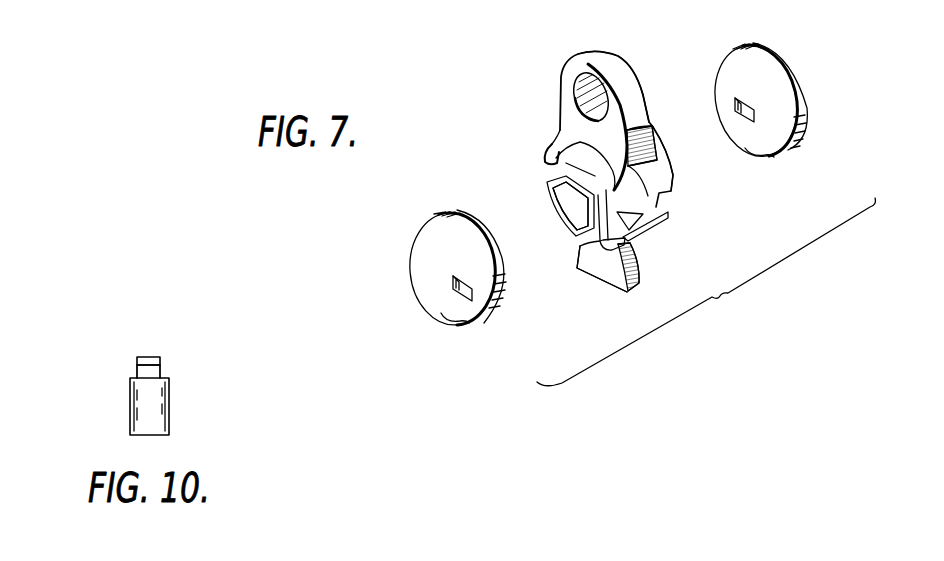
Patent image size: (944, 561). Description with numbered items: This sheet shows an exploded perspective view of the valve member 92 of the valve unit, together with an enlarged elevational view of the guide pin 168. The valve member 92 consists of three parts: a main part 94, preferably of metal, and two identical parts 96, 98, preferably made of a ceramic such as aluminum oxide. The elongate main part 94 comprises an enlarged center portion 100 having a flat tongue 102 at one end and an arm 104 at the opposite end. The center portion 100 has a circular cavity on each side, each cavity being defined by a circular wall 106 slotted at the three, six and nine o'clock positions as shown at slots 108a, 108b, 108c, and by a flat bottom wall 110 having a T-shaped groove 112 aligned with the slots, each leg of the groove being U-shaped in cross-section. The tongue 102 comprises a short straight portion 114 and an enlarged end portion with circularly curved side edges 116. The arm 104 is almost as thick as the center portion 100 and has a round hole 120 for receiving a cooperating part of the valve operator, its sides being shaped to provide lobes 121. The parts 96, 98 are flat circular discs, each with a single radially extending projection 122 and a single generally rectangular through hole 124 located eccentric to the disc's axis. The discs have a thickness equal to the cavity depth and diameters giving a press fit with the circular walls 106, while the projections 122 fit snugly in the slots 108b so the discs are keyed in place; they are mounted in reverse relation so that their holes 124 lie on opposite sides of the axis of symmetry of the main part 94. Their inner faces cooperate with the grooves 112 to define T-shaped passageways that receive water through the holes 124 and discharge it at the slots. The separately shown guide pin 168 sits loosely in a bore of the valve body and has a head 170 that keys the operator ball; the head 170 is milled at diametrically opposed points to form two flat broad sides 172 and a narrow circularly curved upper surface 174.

In FIG. 7, the valve member 92 is at (706, 292).
In FIG. 7, the main part 94 is at (556, 122).
In FIG. 7, the disc part 96 is at (412, 245).
In FIG. 7, the disc part 98 is at (712, 68).
In FIG. 7, the center portion 100 is at (662, 180).
In FIG. 7, the flat tongue 102 is at (598, 265).
In FIG. 7, the arm 104 is at (572, 70).
In FIG. 7, the circular wall 106 is at (565, 204).
In FIG. 7, the slot 108a is at (665, 222).
In FIG. 7, the slot 108b is at (600, 246).
In FIG. 7, the slot 108c is at (551, 163).
In FIG. 7, the flat bottom wall 110 is at (649, 119).
In FIG. 7, the T-shaped groove 112 is at (664, 157).
In FIG. 7, the short straight portion 114 is at (634, 252).
In FIG. 7, the circularly curved side edges 116 is at (641, 288).
In FIG. 7, the round hole 120 is at (575, 102).
In FIG. 7, the lobes 121 is at (660, 128).
In FIG. 7, the projection 122 is at (457, 317).
In FIG. 7, the through hole 124 is at (459, 288).
In FIG. 10, the guide pin 168 is at (171, 406).
In FIG. 10, the head 170 is at (138, 370).
In FIG. 10, the flat broad sides 172 is at (136, 372).
In FIG. 10, the circularly curved upper surface 174 is at (152, 357).